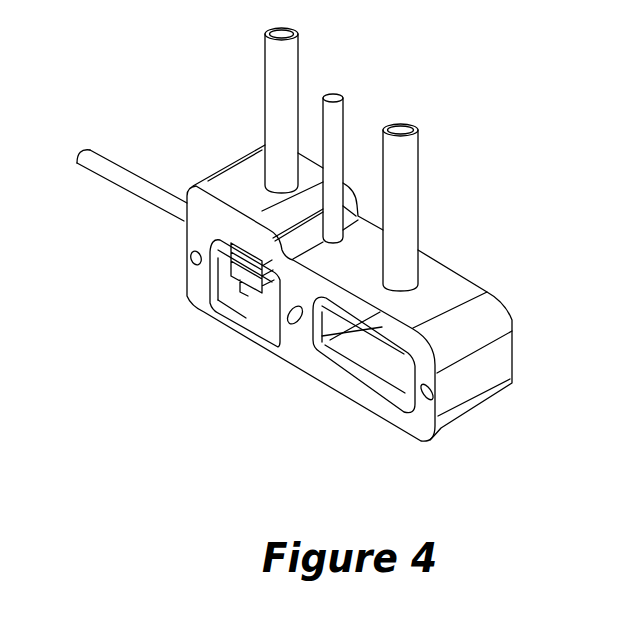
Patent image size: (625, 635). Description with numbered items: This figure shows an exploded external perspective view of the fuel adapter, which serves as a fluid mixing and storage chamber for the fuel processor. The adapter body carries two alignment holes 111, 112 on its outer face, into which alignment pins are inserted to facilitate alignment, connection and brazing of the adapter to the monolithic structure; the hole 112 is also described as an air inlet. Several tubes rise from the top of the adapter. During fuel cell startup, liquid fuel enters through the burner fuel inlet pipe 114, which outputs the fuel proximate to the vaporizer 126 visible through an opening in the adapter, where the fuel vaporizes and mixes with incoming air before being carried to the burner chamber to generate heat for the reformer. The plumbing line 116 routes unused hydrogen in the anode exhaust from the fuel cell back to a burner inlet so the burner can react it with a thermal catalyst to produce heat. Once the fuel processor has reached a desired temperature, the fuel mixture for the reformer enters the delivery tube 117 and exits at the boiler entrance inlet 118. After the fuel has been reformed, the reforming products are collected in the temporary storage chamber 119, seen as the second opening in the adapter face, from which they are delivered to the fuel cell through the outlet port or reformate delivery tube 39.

The outlet port 39 is at (401, 128).
The alignment hole 111 is at (191, 261).
The alignment hole 112 is at (426, 401).
The burner fuel inlet pipe 114 is at (87, 150).
The plumbing line 116 is at (279, 31).
The delivery tube 117 is at (334, 101).
The boiler entrance inlet 118 is at (290, 323).
The temporary storage chamber 119 is at (377, 358).
The vaporizer 126 is at (236, 279).